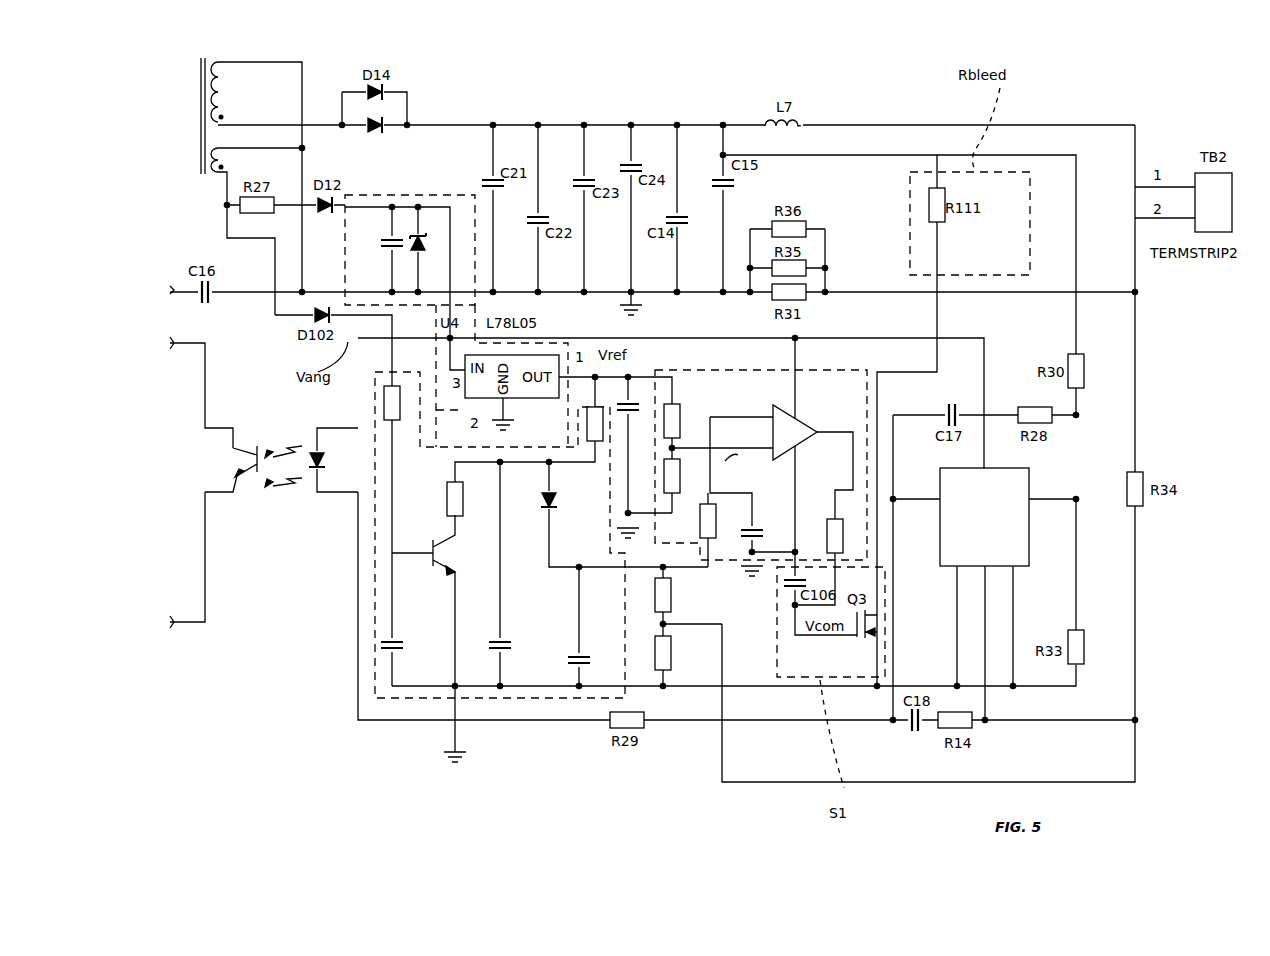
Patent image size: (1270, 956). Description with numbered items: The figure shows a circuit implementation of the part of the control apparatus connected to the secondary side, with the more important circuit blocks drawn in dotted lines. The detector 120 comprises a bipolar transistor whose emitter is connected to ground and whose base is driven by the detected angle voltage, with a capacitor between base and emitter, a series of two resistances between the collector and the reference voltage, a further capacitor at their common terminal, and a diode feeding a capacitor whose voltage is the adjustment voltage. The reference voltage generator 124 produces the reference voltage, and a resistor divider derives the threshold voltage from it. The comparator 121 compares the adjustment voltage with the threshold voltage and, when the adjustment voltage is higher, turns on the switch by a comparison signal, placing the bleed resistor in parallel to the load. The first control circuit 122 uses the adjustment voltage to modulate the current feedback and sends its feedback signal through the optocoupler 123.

The detector 120 is at (535, 700).
The comparator 121 is at (848, 366).
The first control circuit 122 is at (1029, 547).
The optocoupler 123 is at (281, 432).
The reference voltage generator 124 is at (452, 192).